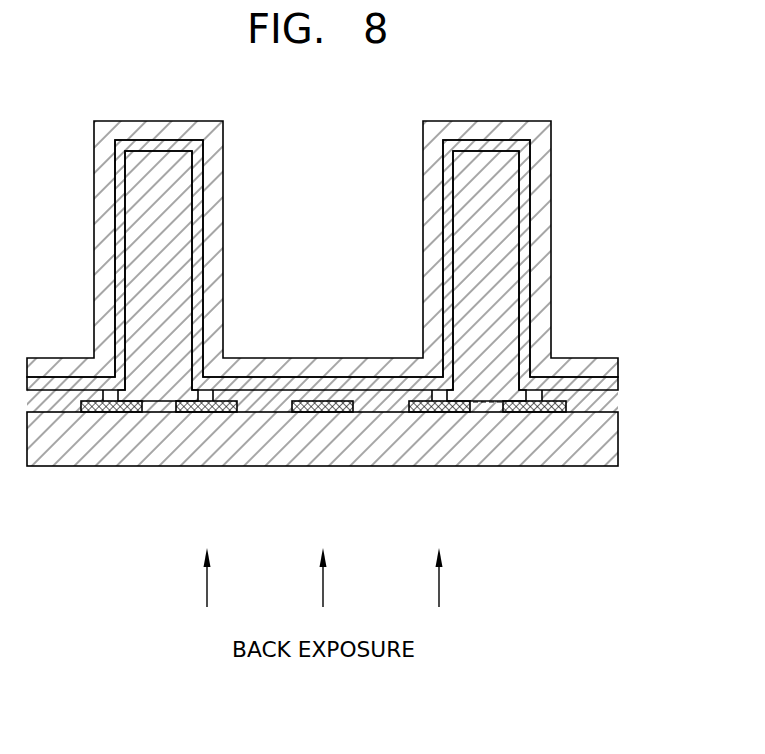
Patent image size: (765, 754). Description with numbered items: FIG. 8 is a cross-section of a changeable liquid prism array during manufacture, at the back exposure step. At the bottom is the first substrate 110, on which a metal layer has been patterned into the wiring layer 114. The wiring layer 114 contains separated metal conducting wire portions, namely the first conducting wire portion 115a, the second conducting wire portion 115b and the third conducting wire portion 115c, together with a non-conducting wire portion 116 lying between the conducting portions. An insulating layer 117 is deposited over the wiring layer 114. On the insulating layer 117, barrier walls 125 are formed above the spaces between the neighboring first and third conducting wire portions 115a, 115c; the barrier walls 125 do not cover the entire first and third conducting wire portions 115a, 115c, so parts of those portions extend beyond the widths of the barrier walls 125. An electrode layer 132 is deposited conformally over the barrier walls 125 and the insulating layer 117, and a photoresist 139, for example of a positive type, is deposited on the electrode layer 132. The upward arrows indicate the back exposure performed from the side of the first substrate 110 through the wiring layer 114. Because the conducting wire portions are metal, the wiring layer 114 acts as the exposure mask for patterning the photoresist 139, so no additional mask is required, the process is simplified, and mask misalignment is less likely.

The first substrate 110 is at (618, 448).
The wiring layer 114 is at (582, 399).
The first conducting wire portion 115a is at (108, 412).
The second conducting wire portion 115b is at (328, 412).
The third conducting wire portion 115c is at (192, 412).
The non-conducting wire portion 116 is at (487, 412).
The insulating layer 117 is at (618, 404).
The barrier wall 125 is at (506, 248).
The electrode layer 132 is at (525, 197).
The photoresist 139 is at (545, 141).